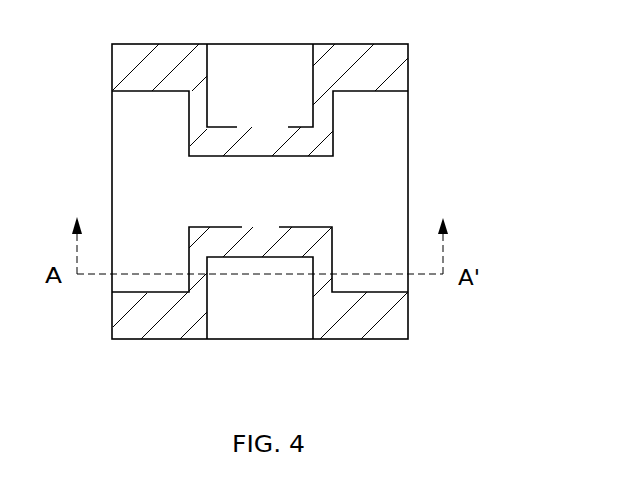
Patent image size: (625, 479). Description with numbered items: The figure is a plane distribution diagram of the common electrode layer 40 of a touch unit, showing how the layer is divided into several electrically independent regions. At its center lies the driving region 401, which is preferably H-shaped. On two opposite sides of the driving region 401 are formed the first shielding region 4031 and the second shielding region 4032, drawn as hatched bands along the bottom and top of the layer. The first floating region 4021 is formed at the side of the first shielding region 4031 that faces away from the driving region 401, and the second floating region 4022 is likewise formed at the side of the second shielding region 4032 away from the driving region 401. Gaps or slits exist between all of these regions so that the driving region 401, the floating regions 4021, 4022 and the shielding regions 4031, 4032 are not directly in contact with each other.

The common electrode layer 40 is at (272, 392).
The driving region 401 is at (260, 191).
The first floating region 4021 is at (260, 298).
The second floating region 4022 is at (260, 85).
The first shielding region 4031 is at (390, 318).
The second shielding region 4032 is at (395, 66).